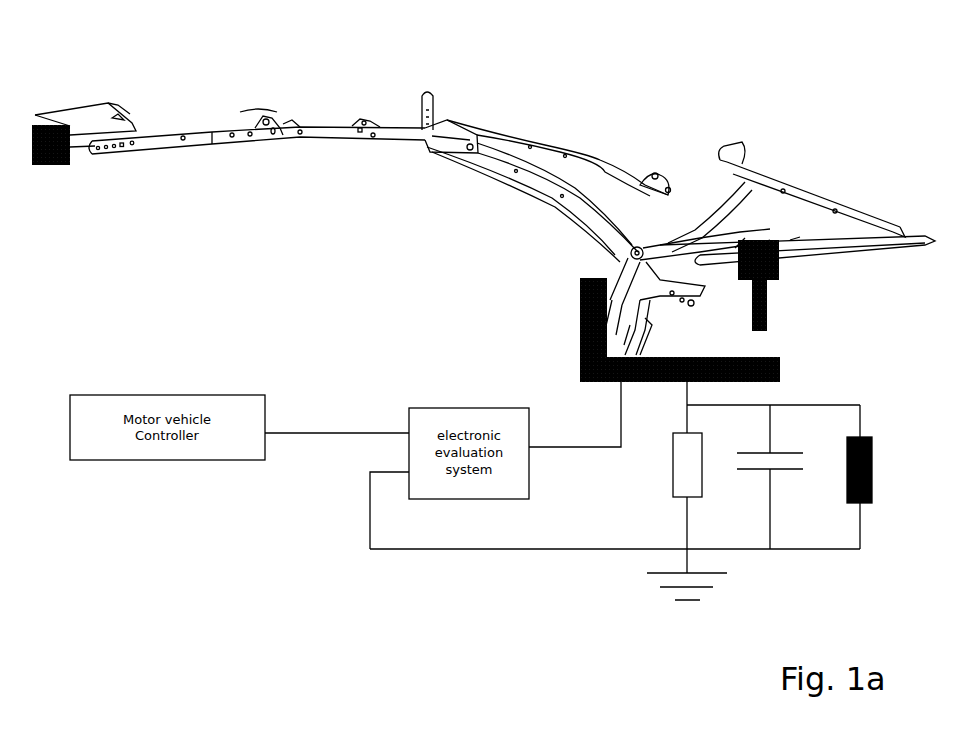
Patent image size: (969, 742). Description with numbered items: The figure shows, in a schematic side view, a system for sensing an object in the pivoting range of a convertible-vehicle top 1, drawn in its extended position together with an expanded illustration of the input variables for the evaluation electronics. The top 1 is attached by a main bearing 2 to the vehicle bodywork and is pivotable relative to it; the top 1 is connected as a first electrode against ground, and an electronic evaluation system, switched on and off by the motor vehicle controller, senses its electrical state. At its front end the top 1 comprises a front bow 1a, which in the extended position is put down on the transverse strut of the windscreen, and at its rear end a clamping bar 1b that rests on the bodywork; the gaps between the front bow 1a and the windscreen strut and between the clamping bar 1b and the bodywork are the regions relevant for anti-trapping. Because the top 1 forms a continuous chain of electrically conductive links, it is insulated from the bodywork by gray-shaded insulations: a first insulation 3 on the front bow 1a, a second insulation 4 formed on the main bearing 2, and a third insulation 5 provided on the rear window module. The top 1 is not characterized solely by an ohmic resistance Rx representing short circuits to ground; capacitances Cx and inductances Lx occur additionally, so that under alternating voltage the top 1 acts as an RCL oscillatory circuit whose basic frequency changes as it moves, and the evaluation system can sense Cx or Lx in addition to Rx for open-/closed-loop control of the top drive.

The convertible-vehicle top 1 is at (152, 152).
The front bow 1a is at (75, 103).
The clamping bar 1b is at (912, 225).
The main bearing 2 is at (655, 388).
The first insulation 3 is at (50, 167).
The second insulation 4 is at (580, 358).
The third insulation 5 is at (765, 242).
The ohmic resistance Rx is at (698, 475).
The capacitance Cx is at (794, 507).
The inductance Lx is at (879, 477).